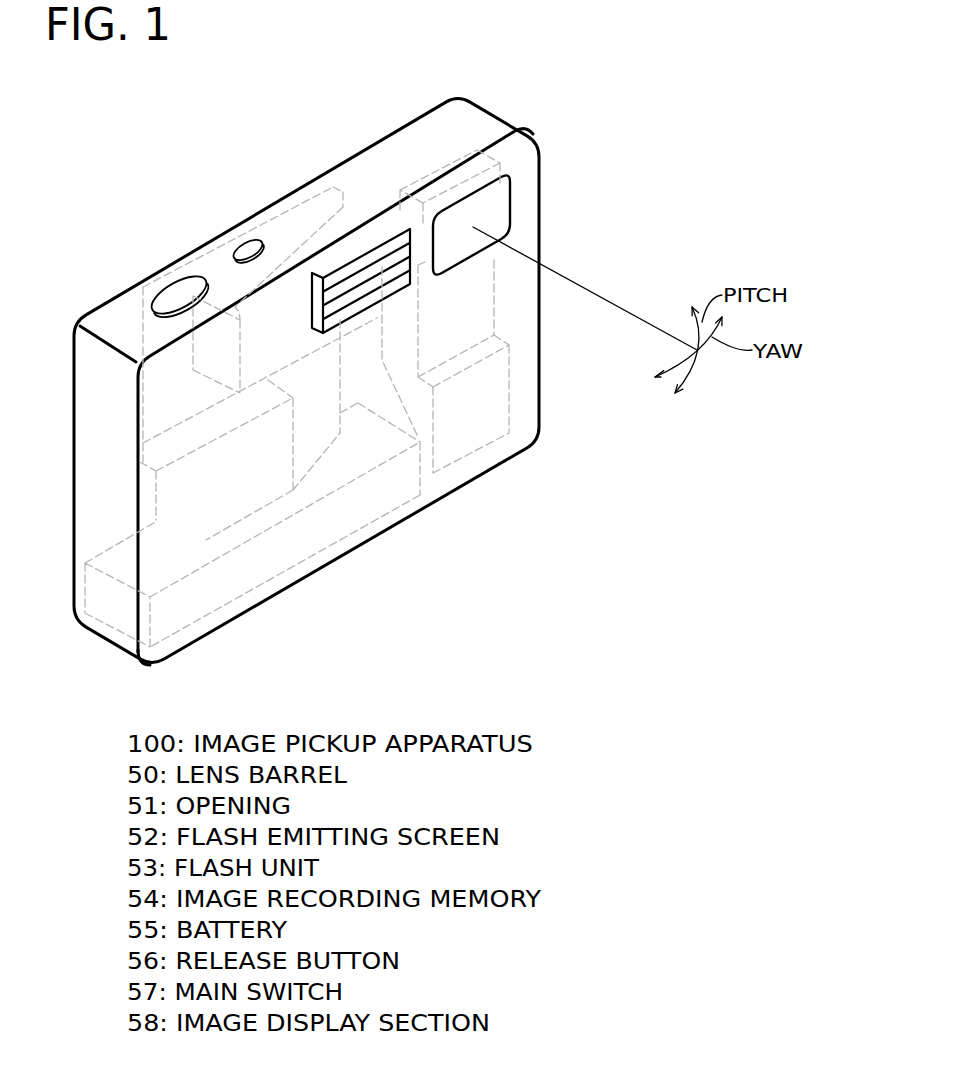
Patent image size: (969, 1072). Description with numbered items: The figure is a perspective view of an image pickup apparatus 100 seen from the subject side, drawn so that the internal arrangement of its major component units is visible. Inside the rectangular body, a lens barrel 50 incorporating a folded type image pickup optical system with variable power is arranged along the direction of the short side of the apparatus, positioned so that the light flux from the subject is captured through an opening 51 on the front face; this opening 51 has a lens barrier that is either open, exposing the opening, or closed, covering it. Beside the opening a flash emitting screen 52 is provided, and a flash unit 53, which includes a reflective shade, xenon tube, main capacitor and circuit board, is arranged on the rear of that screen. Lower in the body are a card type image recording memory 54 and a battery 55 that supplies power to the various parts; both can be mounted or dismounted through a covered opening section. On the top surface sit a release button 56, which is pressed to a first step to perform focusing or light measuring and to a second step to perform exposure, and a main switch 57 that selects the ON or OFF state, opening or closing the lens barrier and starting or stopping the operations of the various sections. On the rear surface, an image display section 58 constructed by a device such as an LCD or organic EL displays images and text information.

The image pickup apparatus 100 is at (358, 88).
The lens barrel 50 is at (480, 310).
The opening 51 is at (490, 217).
The flash emitting screen 52 is at (381, 263).
The flash unit 53 is at (357, 208).
The image recording memory 54 is at (222, 518).
The battery 55 is at (297, 548).
The release button 56 is at (176, 290).
The main switch 57 is at (245, 248).
The image display section 58 is at (283, 213).